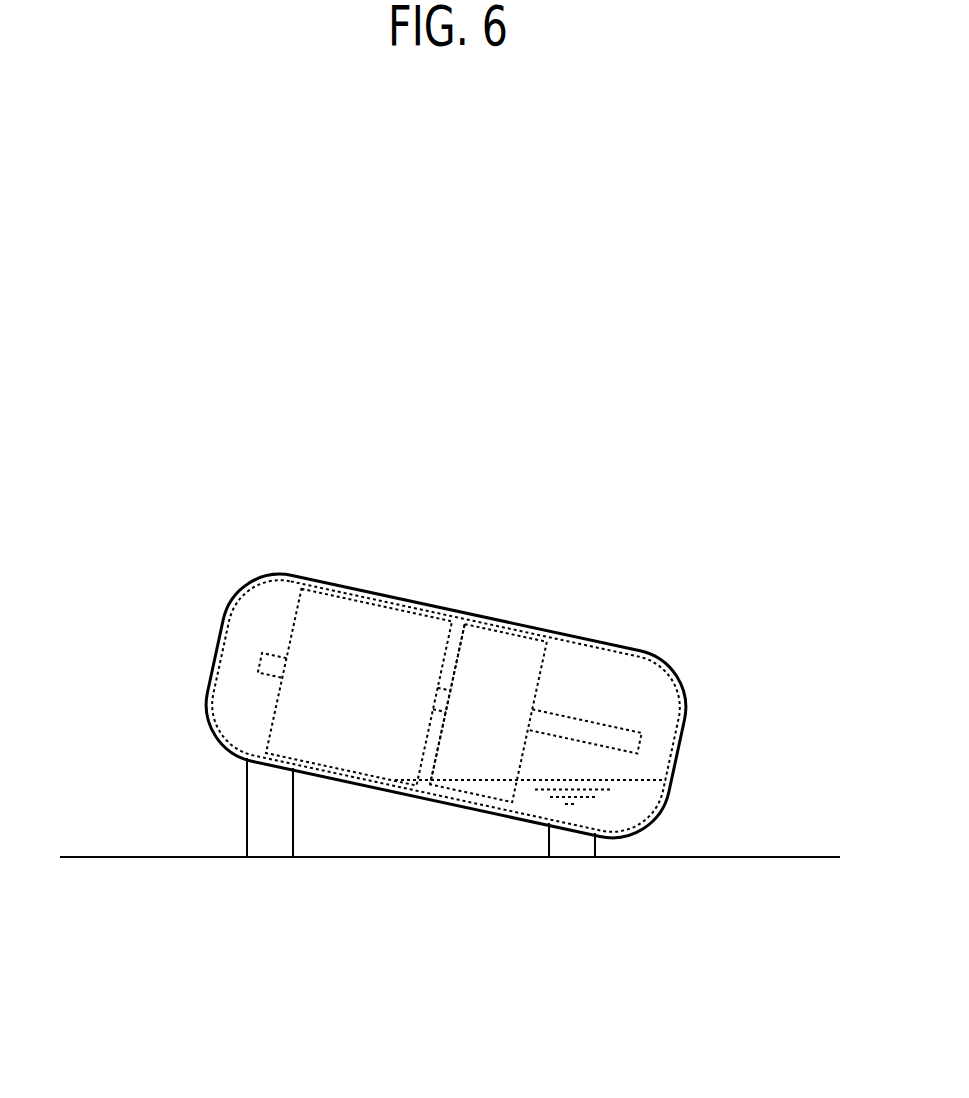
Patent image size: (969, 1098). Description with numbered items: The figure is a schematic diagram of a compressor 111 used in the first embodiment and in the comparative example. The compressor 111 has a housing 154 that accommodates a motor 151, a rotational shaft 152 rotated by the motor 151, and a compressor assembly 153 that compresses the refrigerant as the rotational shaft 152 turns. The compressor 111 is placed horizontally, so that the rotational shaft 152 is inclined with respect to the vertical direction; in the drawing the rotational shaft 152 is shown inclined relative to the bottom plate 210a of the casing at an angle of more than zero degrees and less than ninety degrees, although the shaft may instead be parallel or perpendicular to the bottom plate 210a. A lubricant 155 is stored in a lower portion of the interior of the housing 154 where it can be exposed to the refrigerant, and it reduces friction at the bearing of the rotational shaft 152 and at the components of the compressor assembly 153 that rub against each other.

The compressor 111 is at (440, 476).
The motor 151 is at (503, 627).
The rotational shaft 152 is at (595, 730).
The compressor assembly 153 is at (375, 600).
The housing 154 is at (281, 575).
The lubricant 155 is at (643, 801).
The bottom plate 210a is at (423, 857).